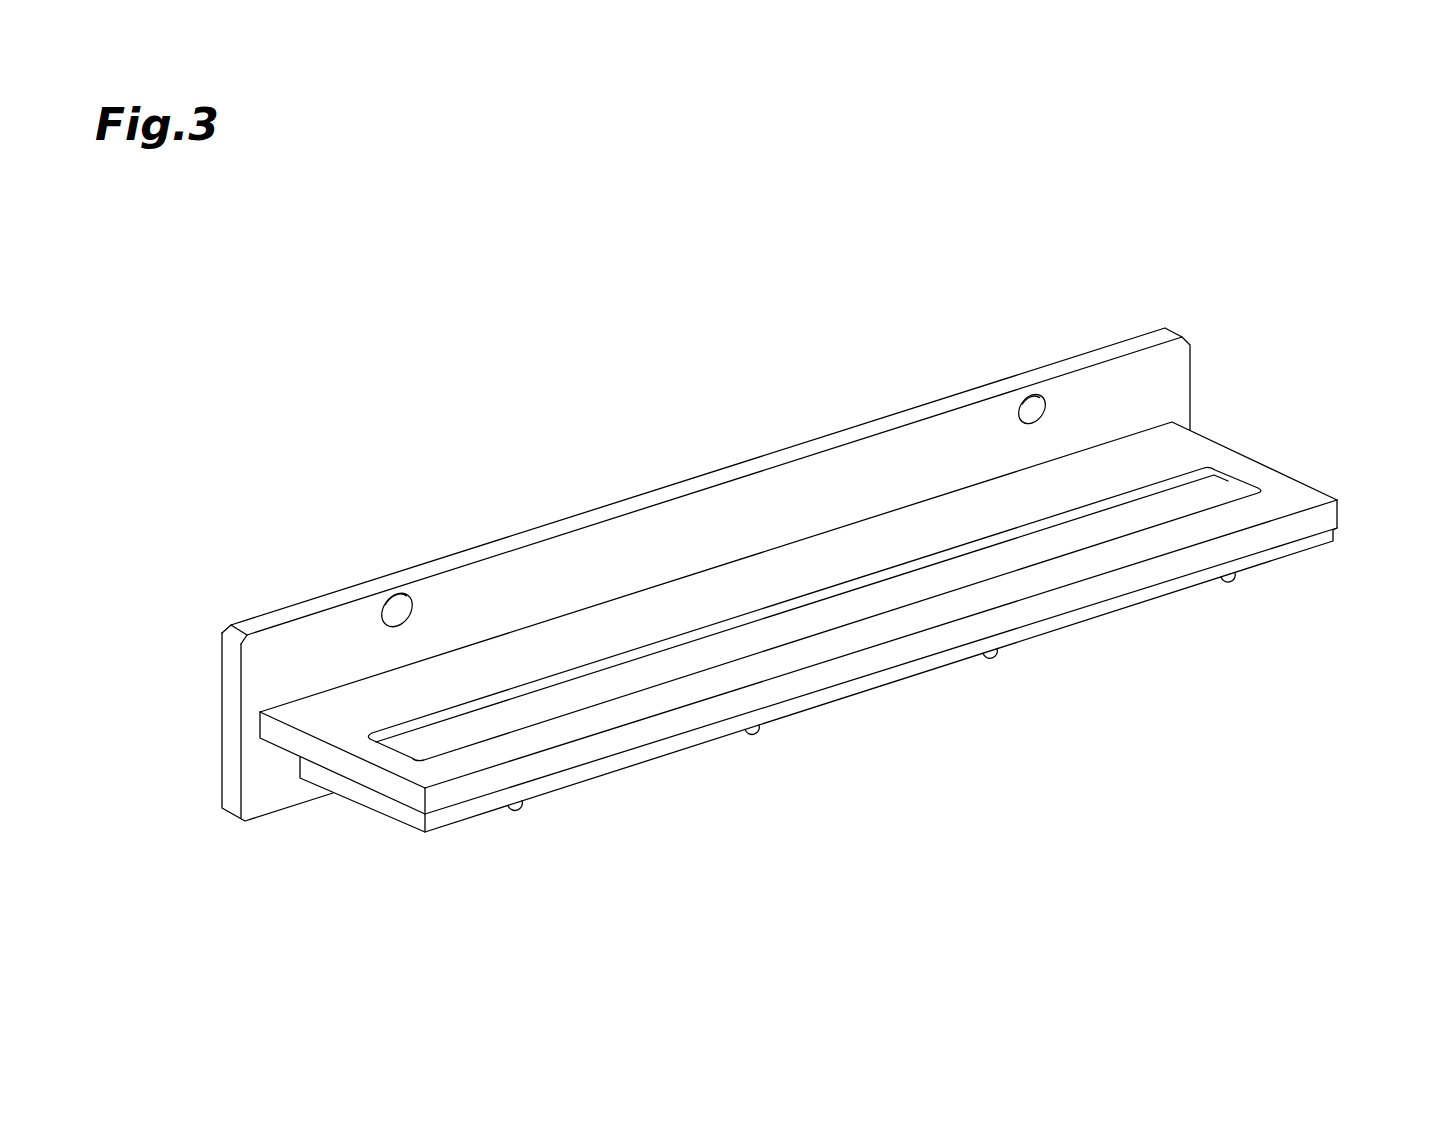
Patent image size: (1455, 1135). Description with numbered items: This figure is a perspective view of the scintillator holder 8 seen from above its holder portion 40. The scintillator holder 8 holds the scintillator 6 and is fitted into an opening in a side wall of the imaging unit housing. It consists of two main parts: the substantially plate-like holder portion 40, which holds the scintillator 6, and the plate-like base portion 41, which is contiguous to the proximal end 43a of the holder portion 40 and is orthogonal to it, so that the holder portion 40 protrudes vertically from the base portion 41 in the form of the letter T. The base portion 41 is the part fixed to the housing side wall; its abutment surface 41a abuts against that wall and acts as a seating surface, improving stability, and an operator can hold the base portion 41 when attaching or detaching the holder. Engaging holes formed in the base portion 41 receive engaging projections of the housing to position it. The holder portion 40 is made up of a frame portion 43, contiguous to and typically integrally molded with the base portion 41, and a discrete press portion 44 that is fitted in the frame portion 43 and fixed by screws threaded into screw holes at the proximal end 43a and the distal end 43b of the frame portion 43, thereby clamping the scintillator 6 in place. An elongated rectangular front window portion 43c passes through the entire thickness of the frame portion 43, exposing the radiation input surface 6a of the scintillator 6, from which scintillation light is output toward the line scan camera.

The scintillator holder 8 is at (393, 336).
The holder portion 40 is at (1336, 481).
The base portion 41 is at (867, 419).
The abutment surface 41a is at (600, 553).
The frame portion 43 is at (336, 768).
The proximal end 43a is at (768, 577).
The distal end 43b is at (908, 650).
The front window portion 43c is at (638, 688).
The press portion 44 is at (403, 820).
The scintillator 6 is at (1214, 488).
The radiation input surface 6a is at (720, 645).